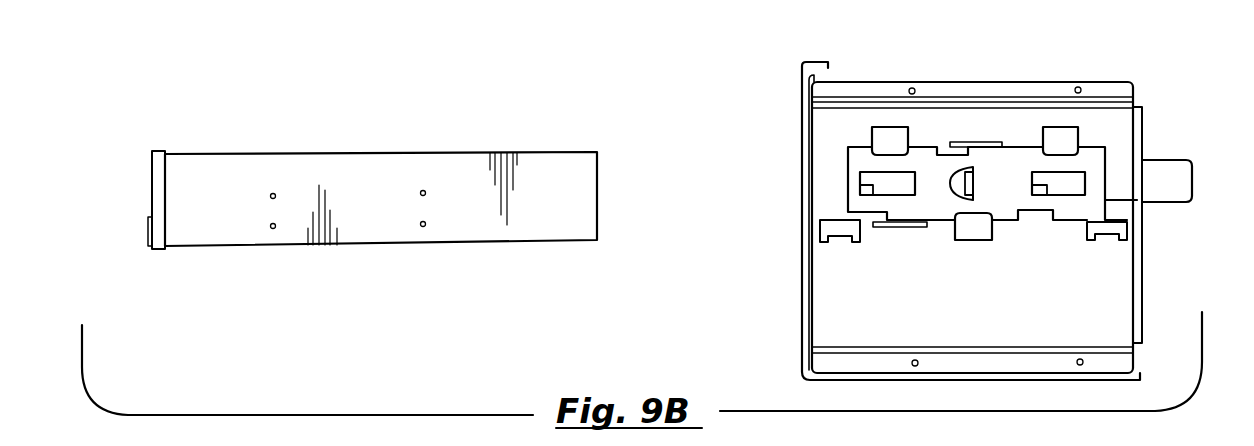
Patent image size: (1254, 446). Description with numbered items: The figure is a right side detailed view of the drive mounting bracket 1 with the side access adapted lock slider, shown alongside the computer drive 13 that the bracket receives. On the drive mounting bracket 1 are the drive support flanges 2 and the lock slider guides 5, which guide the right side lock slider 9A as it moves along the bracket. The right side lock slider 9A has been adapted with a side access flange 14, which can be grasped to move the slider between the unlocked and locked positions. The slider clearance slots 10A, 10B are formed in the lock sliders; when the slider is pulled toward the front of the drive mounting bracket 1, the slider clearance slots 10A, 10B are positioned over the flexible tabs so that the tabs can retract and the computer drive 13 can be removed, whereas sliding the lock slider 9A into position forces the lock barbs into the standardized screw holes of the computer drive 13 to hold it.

The drive mounting bracket 1 is at (1076, 308).
The drive support flanges 2 is at (848, 228).
The lock slider guides 5 is at (890, 137).
The right side lock slider 9A is at (1093, 183).
The slider clearance slot 10A is at (898, 172).
The slider clearance slot 10B is at (1073, 170).
The computer drive 13 is at (572, 191).
The side access flange 14 is at (974, 182).